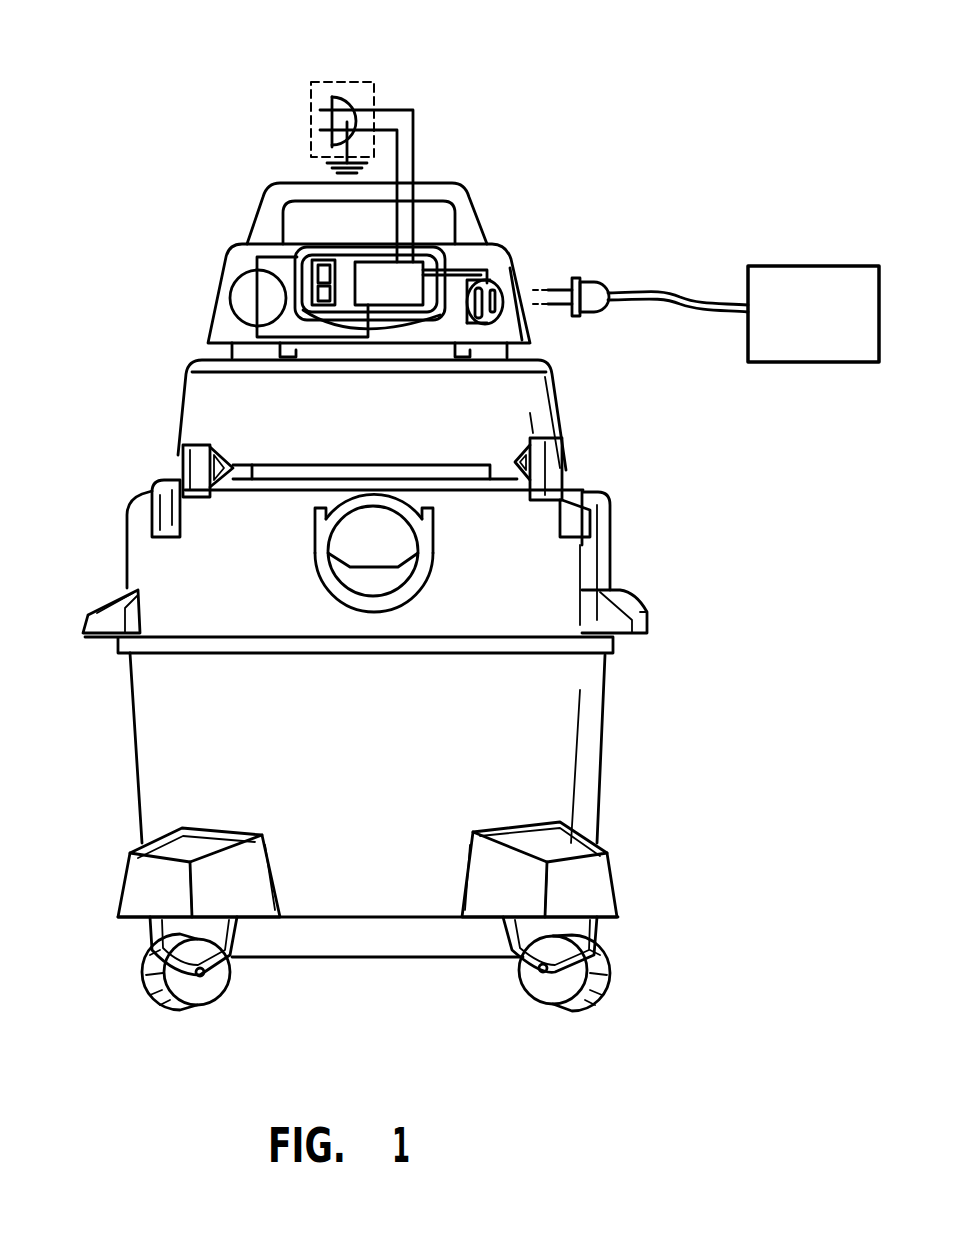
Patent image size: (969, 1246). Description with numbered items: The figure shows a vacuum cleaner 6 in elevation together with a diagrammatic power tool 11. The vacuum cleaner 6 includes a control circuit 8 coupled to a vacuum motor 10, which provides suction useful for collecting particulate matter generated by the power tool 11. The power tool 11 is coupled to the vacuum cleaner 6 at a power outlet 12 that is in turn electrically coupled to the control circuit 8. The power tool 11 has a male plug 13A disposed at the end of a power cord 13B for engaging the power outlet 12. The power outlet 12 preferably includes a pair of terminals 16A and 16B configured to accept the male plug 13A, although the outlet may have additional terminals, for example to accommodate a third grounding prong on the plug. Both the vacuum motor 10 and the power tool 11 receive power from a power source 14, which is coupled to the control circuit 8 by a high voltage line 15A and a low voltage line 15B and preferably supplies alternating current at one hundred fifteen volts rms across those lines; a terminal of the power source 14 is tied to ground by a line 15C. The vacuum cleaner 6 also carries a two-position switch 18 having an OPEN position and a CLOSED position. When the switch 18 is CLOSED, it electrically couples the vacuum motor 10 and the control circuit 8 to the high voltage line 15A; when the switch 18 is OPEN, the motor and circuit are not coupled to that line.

The vacuum cleaner 6 is at (487, 186).
The control circuit 8 is at (398, 299).
The vacuum motor 10 is at (228, 300).
The power tool 11 is at (824, 336).
The power outlet 12 is at (497, 268).
The male plug 13A is at (590, 278).
The power cord 13B is at (680, 296).
The power source 14 is at (350, 76).
The high voltage line 15A is at (414, 122).
The low voltage line 15B is at (398, 157).
The ground line 15C is at (347, 146).
The terminal 16A is at (484, 325).
The terminal 16B is at (520, 348).
The two-position switch 18 is at (323, 305).